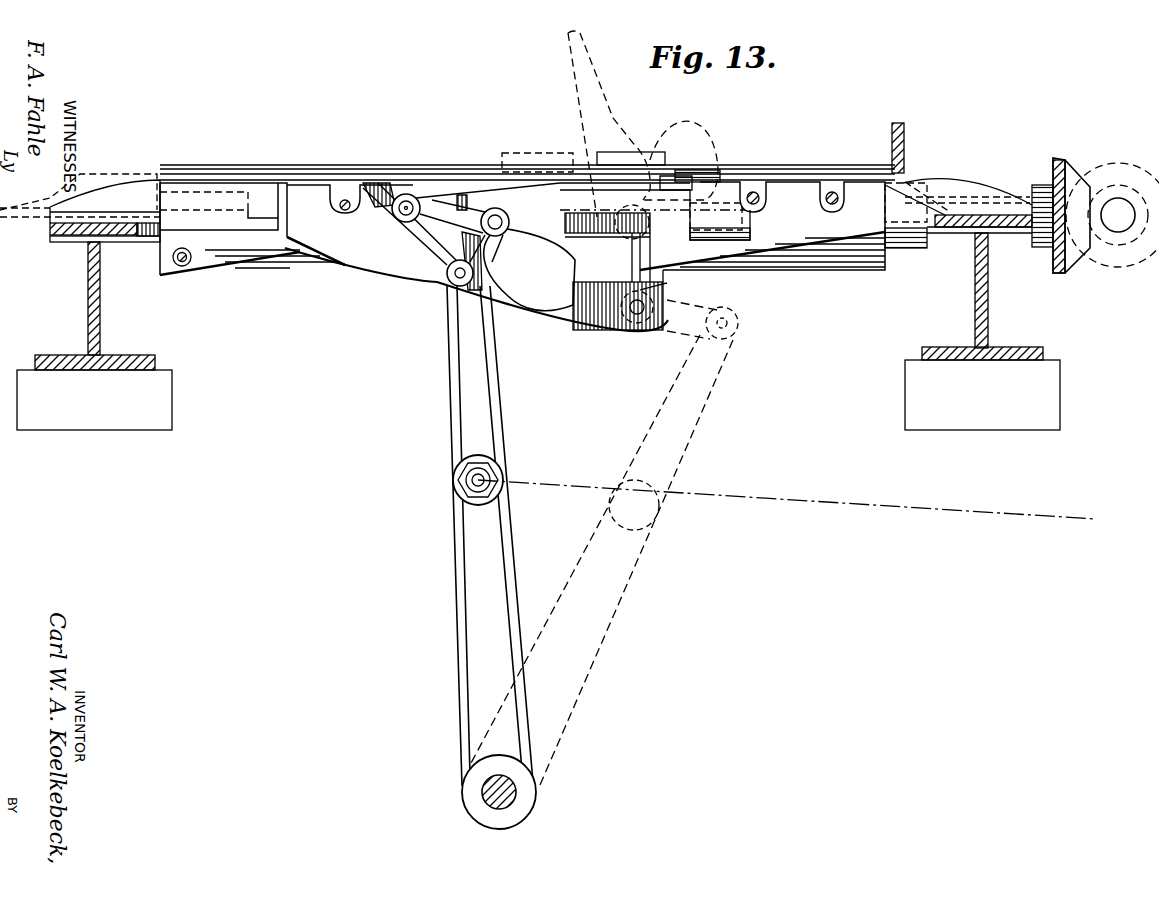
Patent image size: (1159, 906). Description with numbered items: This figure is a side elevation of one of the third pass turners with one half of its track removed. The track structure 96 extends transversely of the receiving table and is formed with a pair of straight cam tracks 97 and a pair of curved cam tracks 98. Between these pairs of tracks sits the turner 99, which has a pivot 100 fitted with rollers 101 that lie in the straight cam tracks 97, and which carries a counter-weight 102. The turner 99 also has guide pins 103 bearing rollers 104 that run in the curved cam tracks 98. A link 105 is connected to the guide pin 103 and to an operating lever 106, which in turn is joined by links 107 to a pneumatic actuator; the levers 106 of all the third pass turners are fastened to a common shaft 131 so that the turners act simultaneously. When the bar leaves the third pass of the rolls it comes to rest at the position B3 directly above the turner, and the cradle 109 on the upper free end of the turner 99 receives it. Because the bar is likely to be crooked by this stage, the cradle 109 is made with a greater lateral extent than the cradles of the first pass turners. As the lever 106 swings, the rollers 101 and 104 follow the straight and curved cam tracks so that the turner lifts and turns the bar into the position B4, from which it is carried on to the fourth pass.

The track structure 96 is at (325, 258).
The straight cam track 97 is at (627, 232).
The curved cam track 98 is at (573, 313).
The turner 99 is at (643, 205).
The pivot 100 is at (450, 282).
The roller 101 is at (496, 240).
The counter-weight 102 is at (550, 307).
The guide pin 103 is at (405, 212).
The roller 104 is at (367, 228).
The link 105 is at (447, 257).
The operating lever 106 is at (462, 420).
The link 107 is at (700, 492).
The cradle 109 is at (592, 223).
The shaft 131 is at (516, 792).
The bar material position B3 is at (615, 152).
The bar material position B4 is at (528, 158).